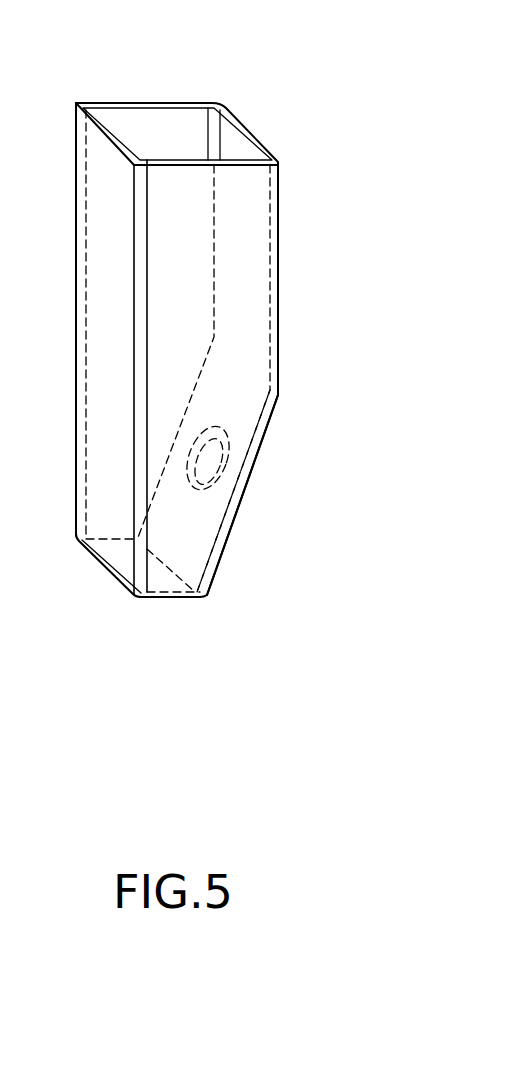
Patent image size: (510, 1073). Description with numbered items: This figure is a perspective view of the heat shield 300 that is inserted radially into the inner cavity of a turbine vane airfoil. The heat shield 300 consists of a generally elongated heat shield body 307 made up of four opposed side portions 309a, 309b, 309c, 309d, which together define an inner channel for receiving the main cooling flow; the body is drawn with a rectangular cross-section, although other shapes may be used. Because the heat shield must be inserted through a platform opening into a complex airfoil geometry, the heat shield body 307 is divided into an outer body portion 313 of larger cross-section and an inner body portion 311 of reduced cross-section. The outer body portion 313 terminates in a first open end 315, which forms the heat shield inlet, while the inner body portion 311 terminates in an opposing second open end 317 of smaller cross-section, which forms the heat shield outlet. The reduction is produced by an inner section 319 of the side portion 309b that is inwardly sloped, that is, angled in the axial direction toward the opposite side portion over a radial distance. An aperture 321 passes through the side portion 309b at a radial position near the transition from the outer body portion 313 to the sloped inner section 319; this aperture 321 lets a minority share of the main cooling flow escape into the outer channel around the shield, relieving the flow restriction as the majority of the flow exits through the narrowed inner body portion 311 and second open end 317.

The heat shield 300 is at (305, 120).
The heat shield body 307 is at (281, 215).
The side portion 309a is at (202, 257).
The side portion 309b is at (267, 257).
The side portion 309c is at (192, 148).
The side portion 309d is at (130, 313).
The inner body portion 311 is at (287, 501).
The outer body portion 313 is at (299, 172).
The first open end 315 is at (195, 105).
The second open end 317 is at (177, 598).
The inner section 319 is at (282, 491).
The aperture 321 is at (222, 428).